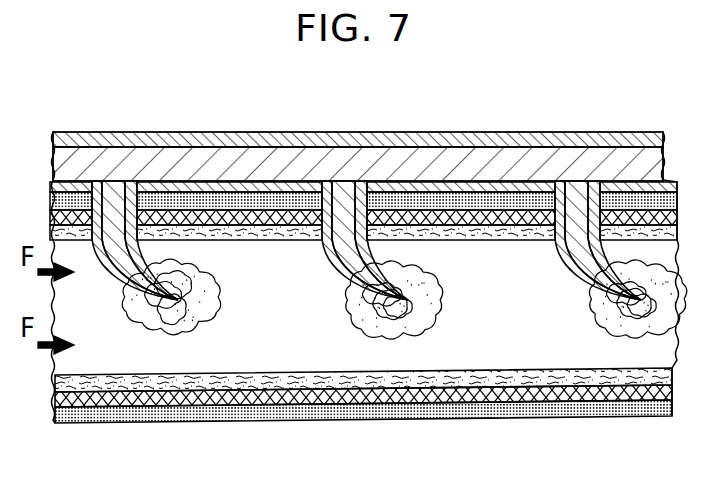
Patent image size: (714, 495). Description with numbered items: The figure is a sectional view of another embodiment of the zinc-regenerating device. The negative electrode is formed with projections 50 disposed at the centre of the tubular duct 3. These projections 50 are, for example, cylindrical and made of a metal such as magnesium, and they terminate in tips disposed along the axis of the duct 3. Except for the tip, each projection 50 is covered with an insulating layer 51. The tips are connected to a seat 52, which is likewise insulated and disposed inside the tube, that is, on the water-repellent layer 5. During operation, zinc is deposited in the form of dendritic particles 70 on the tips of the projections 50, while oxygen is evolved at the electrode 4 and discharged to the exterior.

The seat 52 is at (238, 166).
The insulating layer 51 is at (322, 253).
The projections 50 is at (98, 264).
The dendritic zinc particles 70 is at (210, 316).
The tubular duct 3 is at (189, 383).
The electrode 4 is at (263, 403).
The water-repellent layer 5 is at (341, 410).